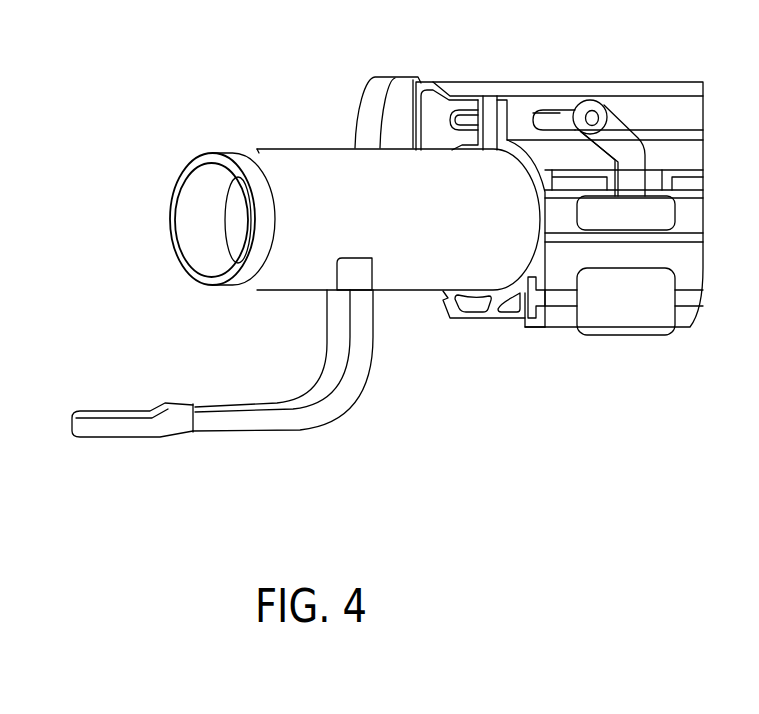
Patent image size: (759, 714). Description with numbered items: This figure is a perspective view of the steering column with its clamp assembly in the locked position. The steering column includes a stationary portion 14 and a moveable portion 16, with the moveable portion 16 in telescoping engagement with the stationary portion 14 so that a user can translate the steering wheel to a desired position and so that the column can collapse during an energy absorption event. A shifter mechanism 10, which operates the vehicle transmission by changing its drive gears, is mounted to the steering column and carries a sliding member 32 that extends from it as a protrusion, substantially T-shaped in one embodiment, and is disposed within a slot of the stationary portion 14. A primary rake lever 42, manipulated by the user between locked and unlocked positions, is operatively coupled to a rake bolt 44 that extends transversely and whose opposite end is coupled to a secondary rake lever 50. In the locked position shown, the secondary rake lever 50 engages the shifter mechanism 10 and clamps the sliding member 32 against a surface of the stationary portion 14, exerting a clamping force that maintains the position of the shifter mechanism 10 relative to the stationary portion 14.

The shifter mechanism 10 is at (640, 320).
The stationary portion 14 is at (493, 95).
The moveable portion 16 is at (323, 160).
The sliding member 32 is at (667, 212).
The primary rake lever 42 is at (337, 395).
The rake bolt 44 is at (547, 117).
The secondary rake lever 50 is at (610, 133).